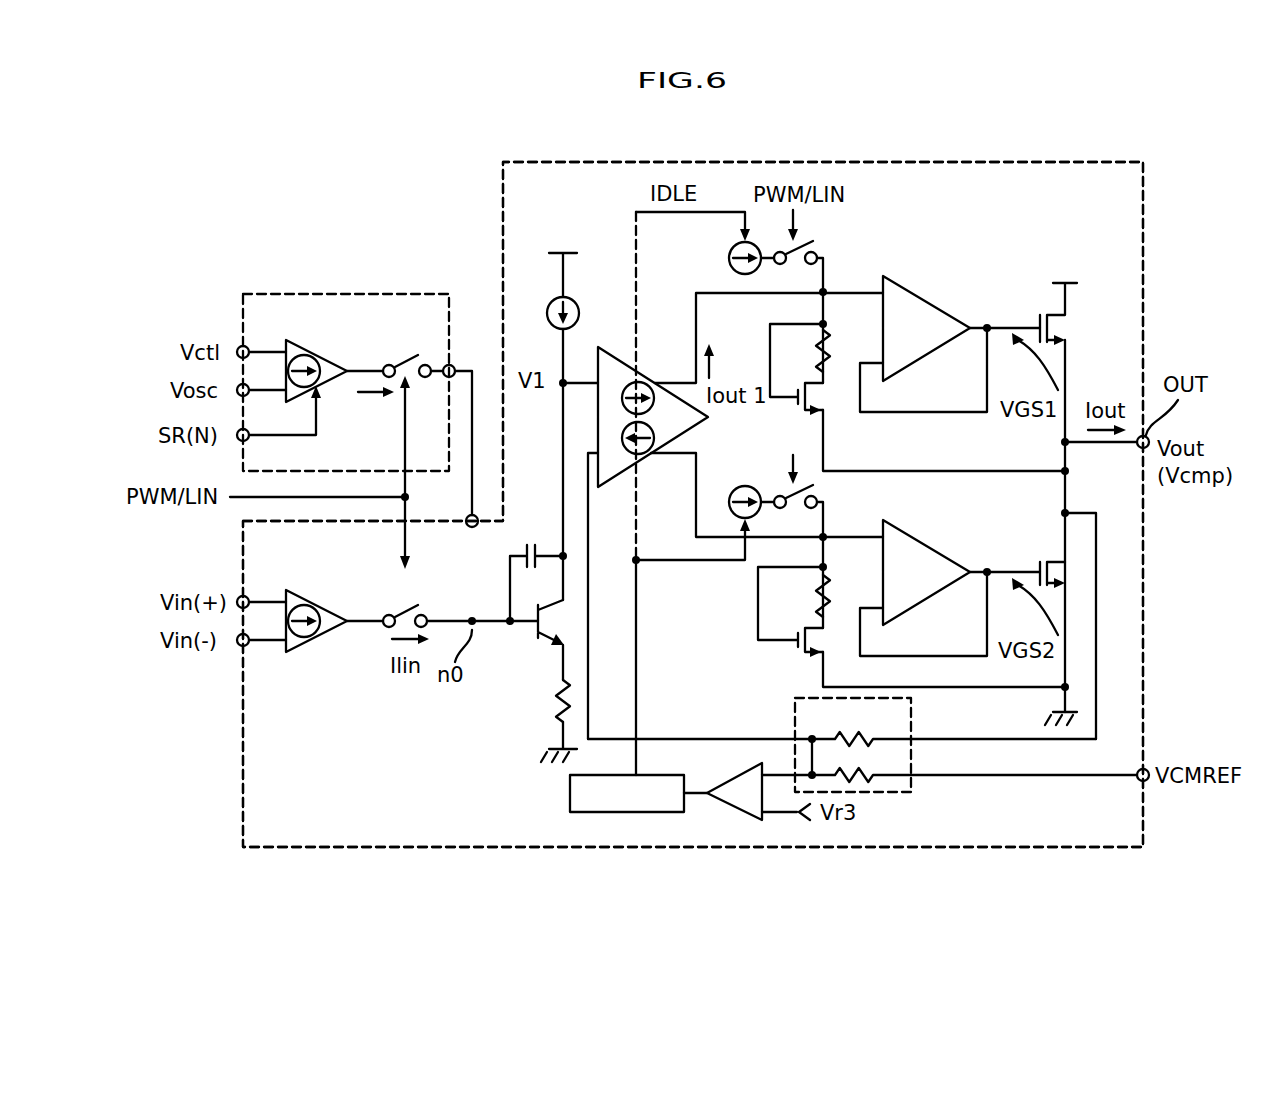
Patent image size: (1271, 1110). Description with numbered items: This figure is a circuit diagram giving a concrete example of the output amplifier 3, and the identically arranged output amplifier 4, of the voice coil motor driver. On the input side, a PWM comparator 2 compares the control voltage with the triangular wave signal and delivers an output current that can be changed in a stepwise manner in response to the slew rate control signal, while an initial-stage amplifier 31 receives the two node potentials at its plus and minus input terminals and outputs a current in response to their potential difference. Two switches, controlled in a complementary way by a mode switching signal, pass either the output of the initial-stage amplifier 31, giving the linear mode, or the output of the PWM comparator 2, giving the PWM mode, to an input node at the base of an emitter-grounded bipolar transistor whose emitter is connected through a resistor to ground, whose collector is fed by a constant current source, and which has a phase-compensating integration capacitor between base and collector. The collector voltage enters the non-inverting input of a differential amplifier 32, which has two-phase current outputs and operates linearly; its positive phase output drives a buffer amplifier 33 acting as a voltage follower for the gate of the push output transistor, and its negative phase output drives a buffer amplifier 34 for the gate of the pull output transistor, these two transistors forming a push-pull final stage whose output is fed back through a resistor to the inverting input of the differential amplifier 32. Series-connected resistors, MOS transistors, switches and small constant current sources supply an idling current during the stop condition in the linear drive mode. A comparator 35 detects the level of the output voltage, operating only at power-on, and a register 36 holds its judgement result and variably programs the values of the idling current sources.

The PWM comparator 2 is at (342, 294).
The output amplifier 3 is at (243, 753).
The output amplifier 4 is at (656, 504).
The initial-stage amplifier 31 is at (308, 652).
The differential amplifier 32 is at (632, 375).
The buffer amplifier 33 is at (926, 311).
The buffer amplifier 34 is at (926, 557).
The comparator 35 is at (727, 804).
The register 36 is at (570, 793).